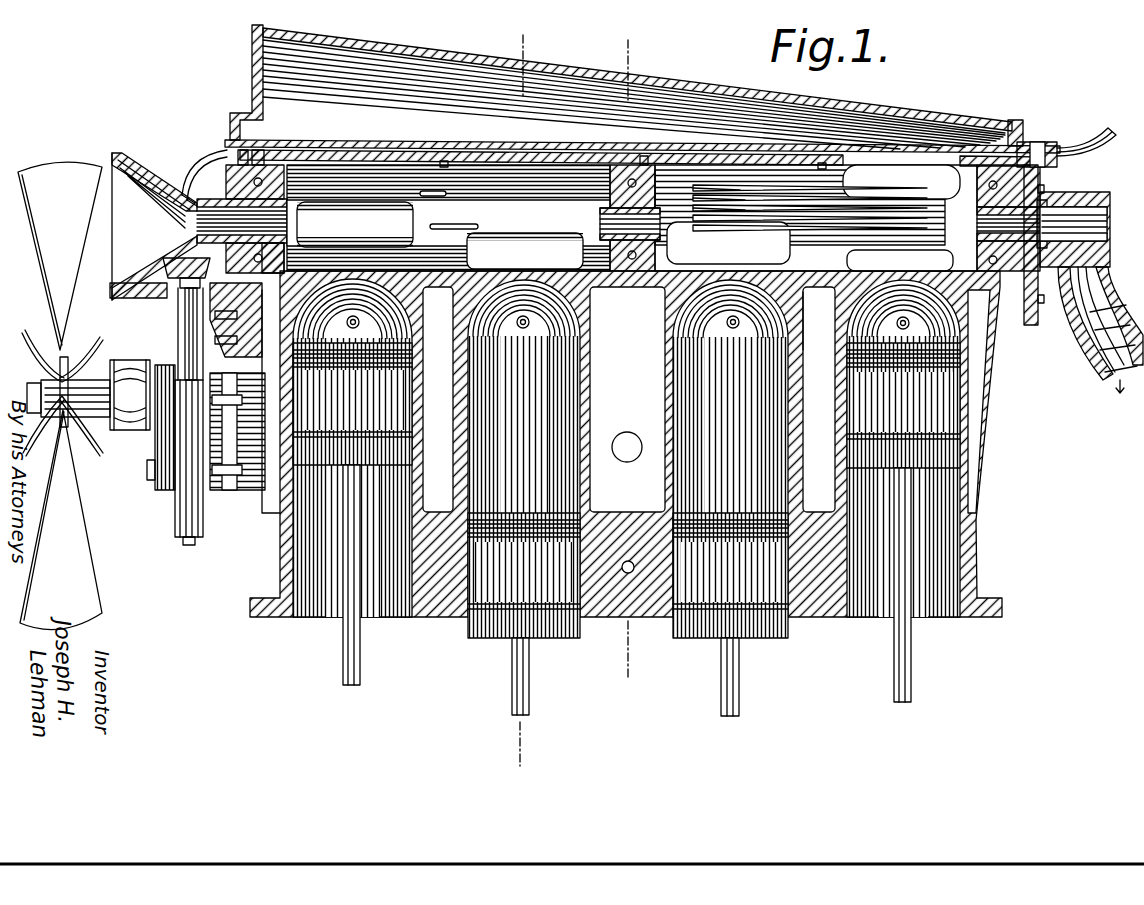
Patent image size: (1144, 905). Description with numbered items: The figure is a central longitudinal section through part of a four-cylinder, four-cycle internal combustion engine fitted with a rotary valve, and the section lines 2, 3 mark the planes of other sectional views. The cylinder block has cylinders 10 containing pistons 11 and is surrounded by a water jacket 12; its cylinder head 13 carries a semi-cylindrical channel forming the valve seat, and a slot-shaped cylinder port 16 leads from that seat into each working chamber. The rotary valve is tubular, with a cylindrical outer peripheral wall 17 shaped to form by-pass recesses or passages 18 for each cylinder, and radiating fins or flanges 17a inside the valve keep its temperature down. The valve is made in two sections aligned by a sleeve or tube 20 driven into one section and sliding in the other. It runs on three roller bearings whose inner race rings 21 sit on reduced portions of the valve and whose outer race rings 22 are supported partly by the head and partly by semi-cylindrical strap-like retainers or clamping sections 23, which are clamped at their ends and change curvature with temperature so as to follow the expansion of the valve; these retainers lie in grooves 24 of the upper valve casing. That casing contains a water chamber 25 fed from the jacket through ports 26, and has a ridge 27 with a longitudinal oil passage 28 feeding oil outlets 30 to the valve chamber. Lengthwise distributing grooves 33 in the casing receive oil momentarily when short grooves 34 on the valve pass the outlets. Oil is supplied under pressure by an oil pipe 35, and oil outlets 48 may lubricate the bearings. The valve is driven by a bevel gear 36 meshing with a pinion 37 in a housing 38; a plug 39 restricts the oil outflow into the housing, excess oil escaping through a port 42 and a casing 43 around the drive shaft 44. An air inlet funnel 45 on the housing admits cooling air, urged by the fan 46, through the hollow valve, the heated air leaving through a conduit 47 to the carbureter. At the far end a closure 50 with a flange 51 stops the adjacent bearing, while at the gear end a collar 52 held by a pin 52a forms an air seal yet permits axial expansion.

The section line 2 is at (521, 399).
The section line 3 is at (628, 360).
The cylinders 10 is at (626, 448).
The pistons 11 is at (626, 529).
The water jacket 12 is at (1000, 396).
The cylinder head 13 is at (818, 288).
The cylinder port 16 is at (418, 286).
The outer peripheral wall 17 is at (738, 178).
The radiating fins or flanges 17a is at (722, 188).
The recesses or passages 18 is at (957, 102).
The sleeve or tube 20 is at (612, 224).
The inner race rings 21 is at (982, 200).
The outer race ring 22 is at (630, 287).
The retainers, shoes, or clamping sections 23 is at (644, 158).
The grooves 24 is at (630, 163).
The water chamber 25 is at (637, 88).
The ports 26 is at (254, 70).
The ridge 27 is at (358, 143).
The oil passage 28 is at (404, 151).
The outlets 30 is at (444, 161).
The distributing grooves 33 is at (525, 167).
The short grooves 34 is at (478, 226).
The oil pipe 35 is at (1104, 138).
The bevel gear 36 is at (212, 178).
The pinion 37 is at (165, 268).
The housing 38 is at (193, 192).
The plug 39 is at (245, 162).
The port 42 is at (208, 300).
The casing 43 is at (175, 335).
The drive shaft 44 is at (185, 545).
The air inlet funnel 45 is at (153, 226).
The fan 46 is at (96, 396).
The conduit 47 is at (1095, 335).
The oil outlets 48 is at (281, 162).
The closure 50 is at (1033, 318).
The flange 51 is at (1042, 302).
The collar 52 is at (262, 182).
The pin 52a is at (281, 275).